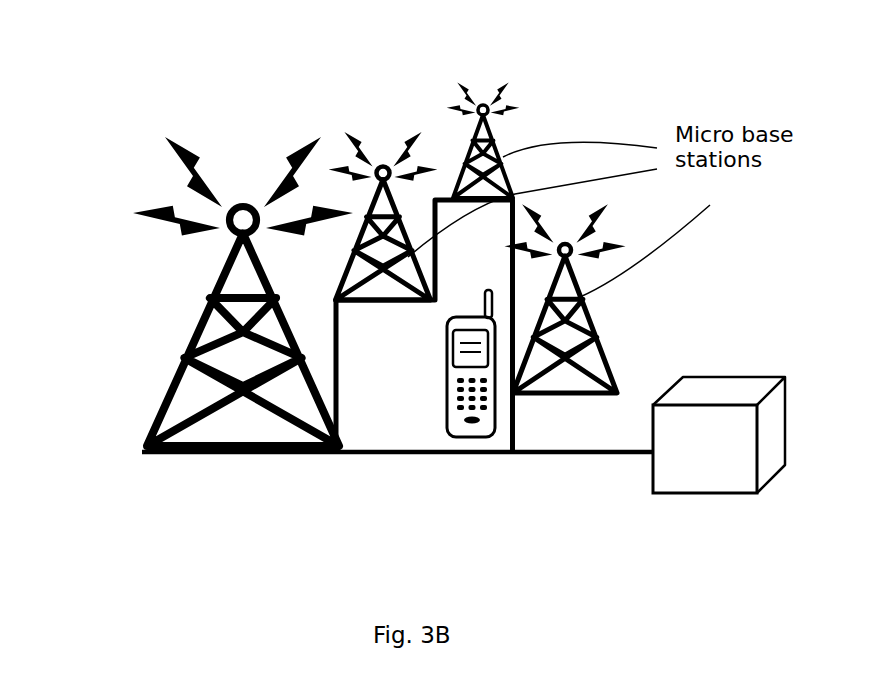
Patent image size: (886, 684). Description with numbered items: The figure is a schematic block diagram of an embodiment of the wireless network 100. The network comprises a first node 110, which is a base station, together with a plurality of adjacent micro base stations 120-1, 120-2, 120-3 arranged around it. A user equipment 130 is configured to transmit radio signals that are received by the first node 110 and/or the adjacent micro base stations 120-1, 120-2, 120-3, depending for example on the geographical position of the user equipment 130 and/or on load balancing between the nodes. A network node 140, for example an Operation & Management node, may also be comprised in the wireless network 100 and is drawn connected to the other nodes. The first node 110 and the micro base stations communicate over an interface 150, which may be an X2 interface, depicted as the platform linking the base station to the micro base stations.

The wireless network 100 is at (104, 136).
The first node 110 is at (193, 328).
The micro base station 120-1 is at (597, 338).
The micro base station 120-2 is at (383, 204).
The micro base station 120-3 is at (483, 125).
The user equipment 130 is at (447, 373).
The network node 140 is at (682, 447).
The interface 150 is at (397, 326).